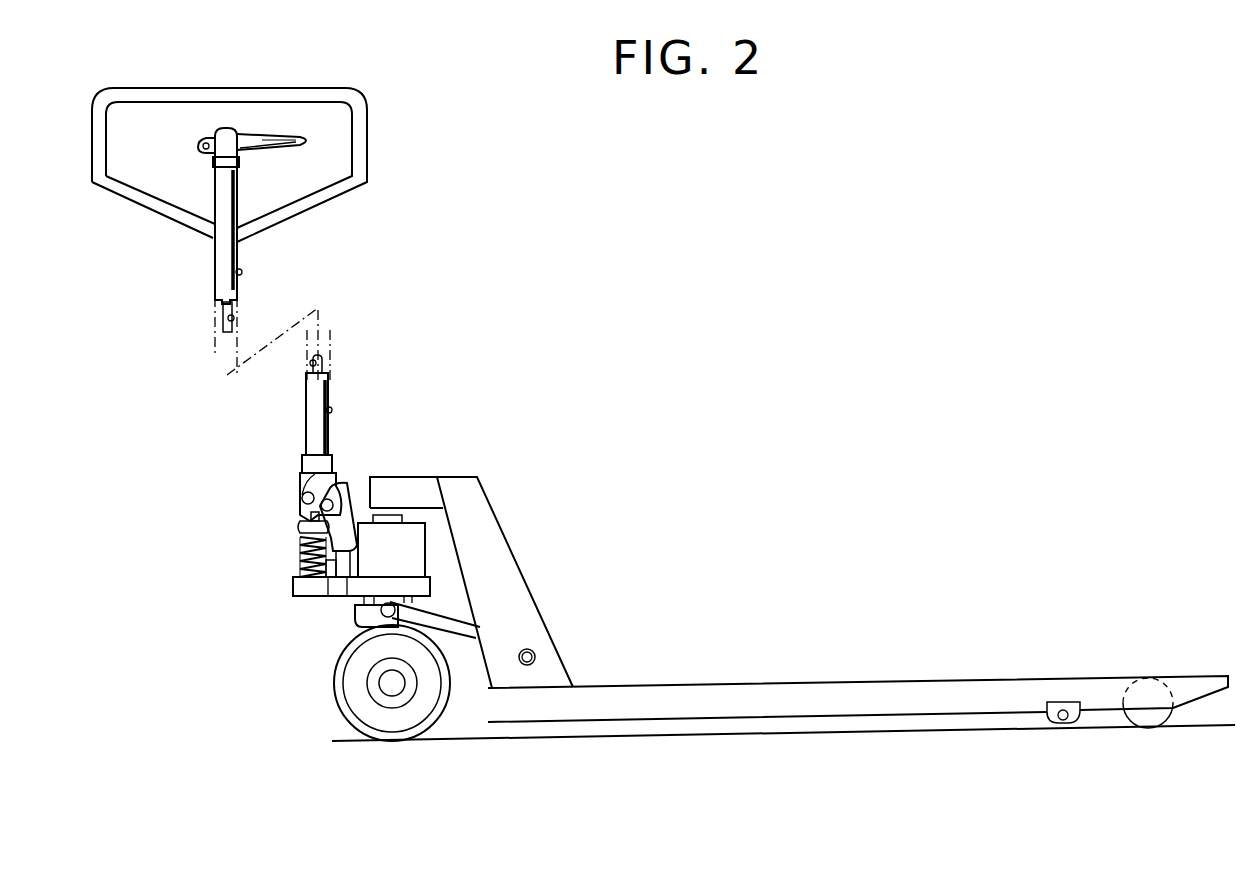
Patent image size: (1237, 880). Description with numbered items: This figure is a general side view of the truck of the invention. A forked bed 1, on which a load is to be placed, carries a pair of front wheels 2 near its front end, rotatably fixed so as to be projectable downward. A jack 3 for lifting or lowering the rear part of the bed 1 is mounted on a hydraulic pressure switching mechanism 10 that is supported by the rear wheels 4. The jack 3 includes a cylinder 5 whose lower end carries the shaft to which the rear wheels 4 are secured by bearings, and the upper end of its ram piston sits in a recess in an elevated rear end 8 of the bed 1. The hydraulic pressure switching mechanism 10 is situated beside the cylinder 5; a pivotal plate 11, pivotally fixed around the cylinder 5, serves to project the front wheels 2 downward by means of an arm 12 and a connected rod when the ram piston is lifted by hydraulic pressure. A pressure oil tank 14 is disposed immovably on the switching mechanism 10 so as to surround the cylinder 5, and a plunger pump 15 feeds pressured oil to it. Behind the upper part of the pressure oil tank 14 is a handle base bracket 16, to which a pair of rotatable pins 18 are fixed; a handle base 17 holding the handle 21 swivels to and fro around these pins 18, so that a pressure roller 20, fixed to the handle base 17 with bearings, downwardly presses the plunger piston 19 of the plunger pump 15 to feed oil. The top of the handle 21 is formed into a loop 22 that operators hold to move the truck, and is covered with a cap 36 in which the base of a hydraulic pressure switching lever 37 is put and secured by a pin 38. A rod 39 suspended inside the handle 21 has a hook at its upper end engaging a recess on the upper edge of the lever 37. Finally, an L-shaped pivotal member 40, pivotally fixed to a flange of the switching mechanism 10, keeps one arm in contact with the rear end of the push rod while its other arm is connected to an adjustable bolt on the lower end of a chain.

The forked bed 1 is at (866, 690).
The front wheels 2 is at (1148, 716).
The jack 3 is at (422, 583).
The rear wheels 4 is at (358, 690).
The cylinder 5 is at (408, 496).
The elevated rear end 8 is at (493, 532).
The hydraulic pressure switching mechanism 10 is at (305, 591).
The pivotal plate 11 is at (357, 632).
The arm 12 is at (470, 630).
The pressure oil tank 14 is at (412, 555).
The plunger pump 15 is at (300, 556).
The handle base bracket 16 is at (345, 500).
The handle base 17 is at (300, 481).
The rotatable pins 18 is at (304, 465).
The plunger piston 19 is at (309, 513).
The pressure roller 20 is at (301, 498).
The handle 21 is at (236, 270).
The loop 22 is at (190, 103).
The cap 36 is at (236, 138).
The hydraulic pressure switching lever 37 is at (266, 152).
The pin 38 is at (197, 148).
The rod 39 is at (222, 315).
The L-shaped pivotal member 40 is at (338, 598).